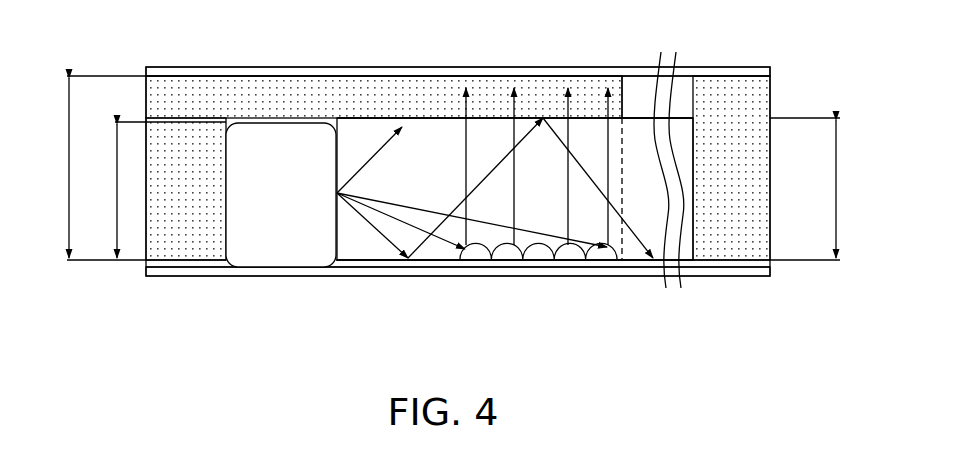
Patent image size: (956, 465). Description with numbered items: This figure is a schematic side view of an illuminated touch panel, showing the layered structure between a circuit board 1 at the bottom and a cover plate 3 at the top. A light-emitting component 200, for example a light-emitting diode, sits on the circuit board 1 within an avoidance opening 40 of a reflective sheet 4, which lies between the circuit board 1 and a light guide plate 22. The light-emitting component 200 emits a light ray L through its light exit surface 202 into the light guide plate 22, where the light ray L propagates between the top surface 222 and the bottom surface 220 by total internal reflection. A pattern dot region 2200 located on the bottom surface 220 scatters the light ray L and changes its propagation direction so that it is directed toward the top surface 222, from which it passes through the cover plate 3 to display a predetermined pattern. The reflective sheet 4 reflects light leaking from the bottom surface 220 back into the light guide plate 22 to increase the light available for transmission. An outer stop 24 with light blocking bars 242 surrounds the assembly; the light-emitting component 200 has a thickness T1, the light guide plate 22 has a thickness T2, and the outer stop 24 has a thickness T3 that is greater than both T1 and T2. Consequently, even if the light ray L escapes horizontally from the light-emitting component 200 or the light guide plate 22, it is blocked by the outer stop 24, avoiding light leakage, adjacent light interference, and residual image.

The circuit board 1 is at (697, 272).
The cover plate 3 is at (736, 72).
The reflective sheet 4 is at (737, 261).
The light guide plate 22 is at (643, 130).
The outer stop 24 is at (183, 242).
The avoidance opening 40 is at (224, 272).
The light-emitting component 200 is at (303, 135).
The light exit surface 202 is at (337, 152).
The bottom surface 220 is at (436, 261).
The top surface 222 is at (427, 118).
The light blocking bar 242 is at (495, 142).
The pattern dot region 2200 is at (540, 254).
The light ray L is at (380, 233).
The thickness of the light-emitting component T1 is at (154, 190).
The thickness of the light guide plate T2 is at (805, 189).
The thickness of the outer stop T3 is at (89, 168).